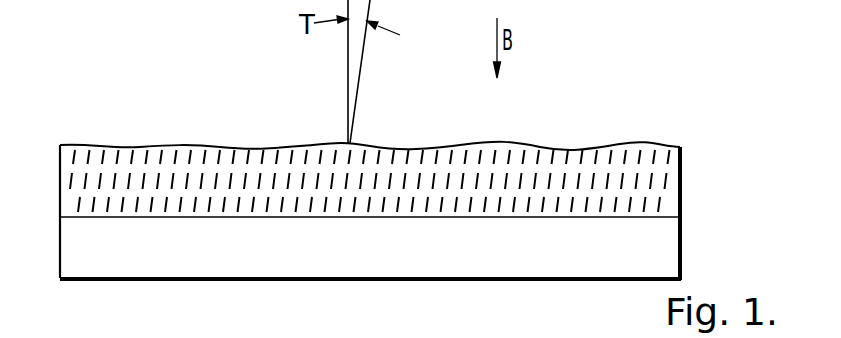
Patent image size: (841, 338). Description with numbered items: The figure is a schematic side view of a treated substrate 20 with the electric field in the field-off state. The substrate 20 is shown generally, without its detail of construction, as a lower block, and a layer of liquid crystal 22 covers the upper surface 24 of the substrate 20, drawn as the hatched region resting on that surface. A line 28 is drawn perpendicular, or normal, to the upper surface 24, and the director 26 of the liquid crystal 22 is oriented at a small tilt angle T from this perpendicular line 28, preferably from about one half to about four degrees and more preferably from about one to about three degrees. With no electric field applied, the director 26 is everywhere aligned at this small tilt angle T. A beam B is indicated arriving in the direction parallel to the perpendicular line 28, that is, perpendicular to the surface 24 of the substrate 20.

The substrate 20 is at (60, 243).
The liquid crystal 22 is at (60, 176).
The upper surface 24 is at (648, 217).
The director 26 is at (230, 160).
The perpendicular line 28 is at (348, 97).